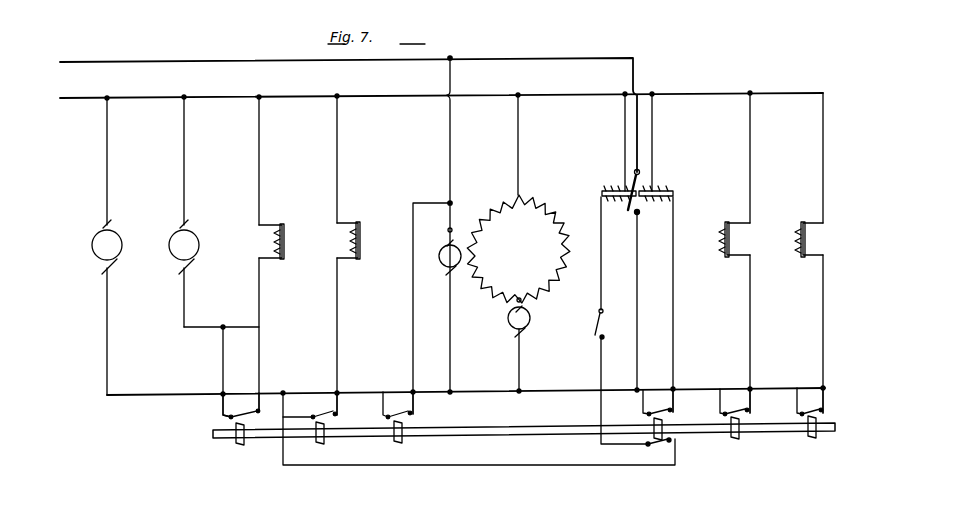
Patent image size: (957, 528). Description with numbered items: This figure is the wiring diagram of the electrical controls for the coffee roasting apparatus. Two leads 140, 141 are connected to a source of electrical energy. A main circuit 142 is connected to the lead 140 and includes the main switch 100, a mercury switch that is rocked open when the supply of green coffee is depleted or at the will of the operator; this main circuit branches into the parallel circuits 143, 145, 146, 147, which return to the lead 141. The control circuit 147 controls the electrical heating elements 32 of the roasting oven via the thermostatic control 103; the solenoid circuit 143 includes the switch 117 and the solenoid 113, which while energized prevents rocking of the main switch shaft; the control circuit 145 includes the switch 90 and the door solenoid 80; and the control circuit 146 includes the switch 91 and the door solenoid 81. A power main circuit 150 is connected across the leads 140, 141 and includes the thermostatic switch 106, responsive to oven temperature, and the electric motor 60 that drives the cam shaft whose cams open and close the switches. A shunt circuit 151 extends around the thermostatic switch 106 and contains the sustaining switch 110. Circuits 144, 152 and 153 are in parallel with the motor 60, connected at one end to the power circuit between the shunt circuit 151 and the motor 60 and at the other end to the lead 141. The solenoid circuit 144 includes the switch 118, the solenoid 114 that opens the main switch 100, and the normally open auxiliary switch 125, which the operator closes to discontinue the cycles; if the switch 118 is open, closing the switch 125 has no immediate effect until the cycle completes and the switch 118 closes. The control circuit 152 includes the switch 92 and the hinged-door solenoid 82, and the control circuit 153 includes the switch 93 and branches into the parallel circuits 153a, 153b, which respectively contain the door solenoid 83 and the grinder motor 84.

The lead 140 is at (91, 61).
The lead 141 is at (92, 97).
The power main circuit 150 is at (111, 200).
The control circuit 153 is at (222, 355).
The parallel circuit 153b is at (186, 192).
The parallel circuit 153a is at (262, 182).
The control circuit 152 is at (339, 176).
The shunt circuit 151 is at (411, 280).
The control circuit 147 is at (521, 152).
The electric motor 60 is at (118, 235).
The electric motor 84 is at (195, 235).
The solenoid 83 is at (288, 220).
The solenoid 82 is at (362, 224).
The thermostatic switch 106 is at (448, 238).
The electrical heating elements 32 is at (548, 210).
The thermostatic control 103 is at (529, 315).
The solenoid 114 is at (612, 190).
The solenoid 113 is at (671, 190).
The main switch 100 is at (640, 176).
The auxiliary switch 125 is at (597, 325).
The solenoid circuit 144 is at (601, 290).
The main circuit 142 is at (639, 292).
The solenoid circuit 143 is at (675, 318).
The control circuit 145 is at (752, 318).
The control circuit 146 is at (823, 315).
The solenoid 80 is at (738, 240).
The solenoid 81 is at (802, 224).
The switch 93 is at (242, 406).
The switch 92 is at (310, 406).
The sustaining switch 110 is at (399, 405).
The switch 117 is at (658, 402).
The switch 90 is at (735, 402).
The switch 91 is at (810, 402).
The switch 118 is at (660, 444).